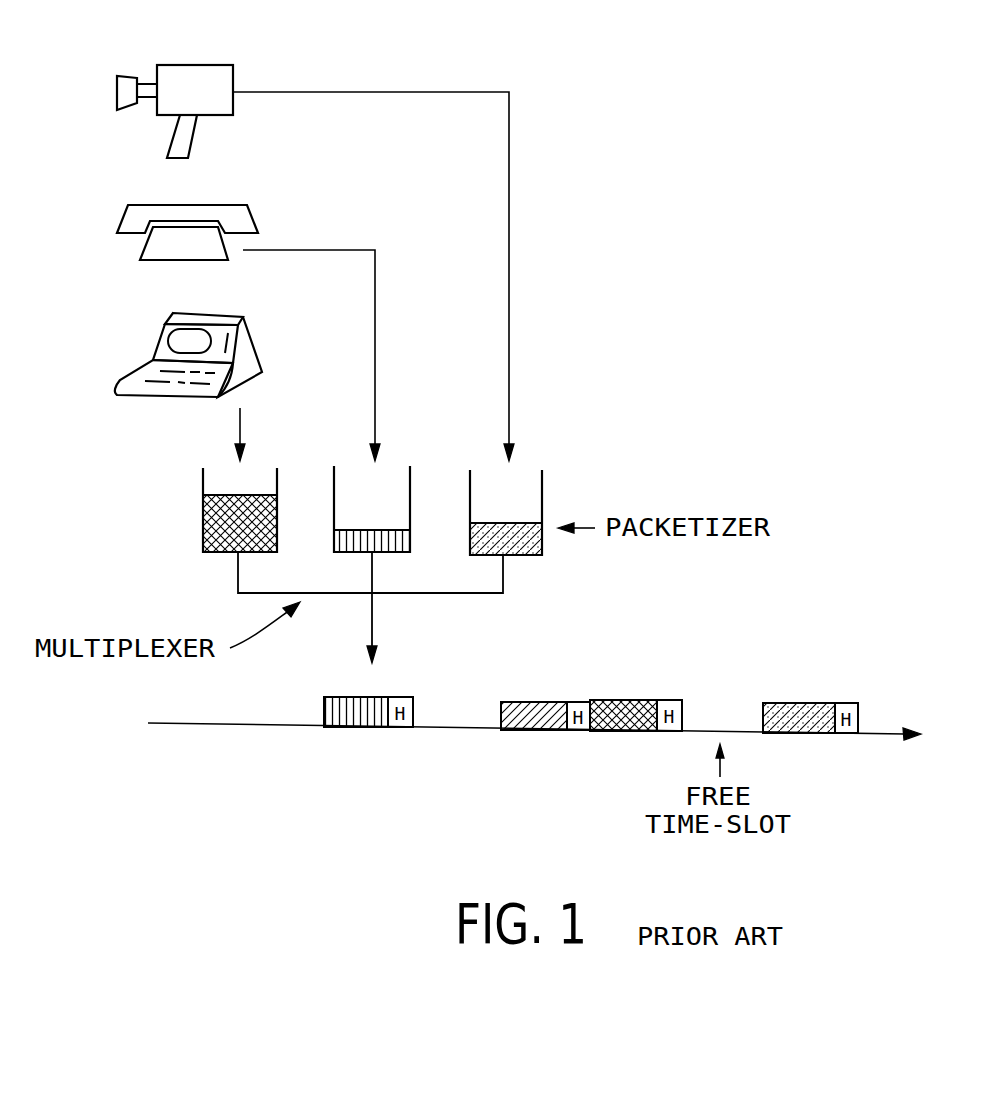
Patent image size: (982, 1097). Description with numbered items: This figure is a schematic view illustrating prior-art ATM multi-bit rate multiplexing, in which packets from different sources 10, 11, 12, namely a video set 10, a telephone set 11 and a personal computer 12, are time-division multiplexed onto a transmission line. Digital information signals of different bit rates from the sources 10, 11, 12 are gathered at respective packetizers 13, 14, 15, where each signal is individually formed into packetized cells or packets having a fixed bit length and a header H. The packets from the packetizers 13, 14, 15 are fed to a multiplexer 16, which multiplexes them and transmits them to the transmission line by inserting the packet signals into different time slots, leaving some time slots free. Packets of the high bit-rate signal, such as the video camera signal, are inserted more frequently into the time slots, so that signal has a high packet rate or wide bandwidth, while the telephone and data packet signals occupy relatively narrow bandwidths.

The source (video set) 10 is at (190, 65).
The source (telephone set) 11 is at (220, 204).
The source (personal computer) 12 is at (250, 315).
The packetizer 13 is at (545, 483).
The packetizer 14 is at (412, 480).
The packetizer 15 is at (280, 480).
The multiplexer 16 is at (388, 605).